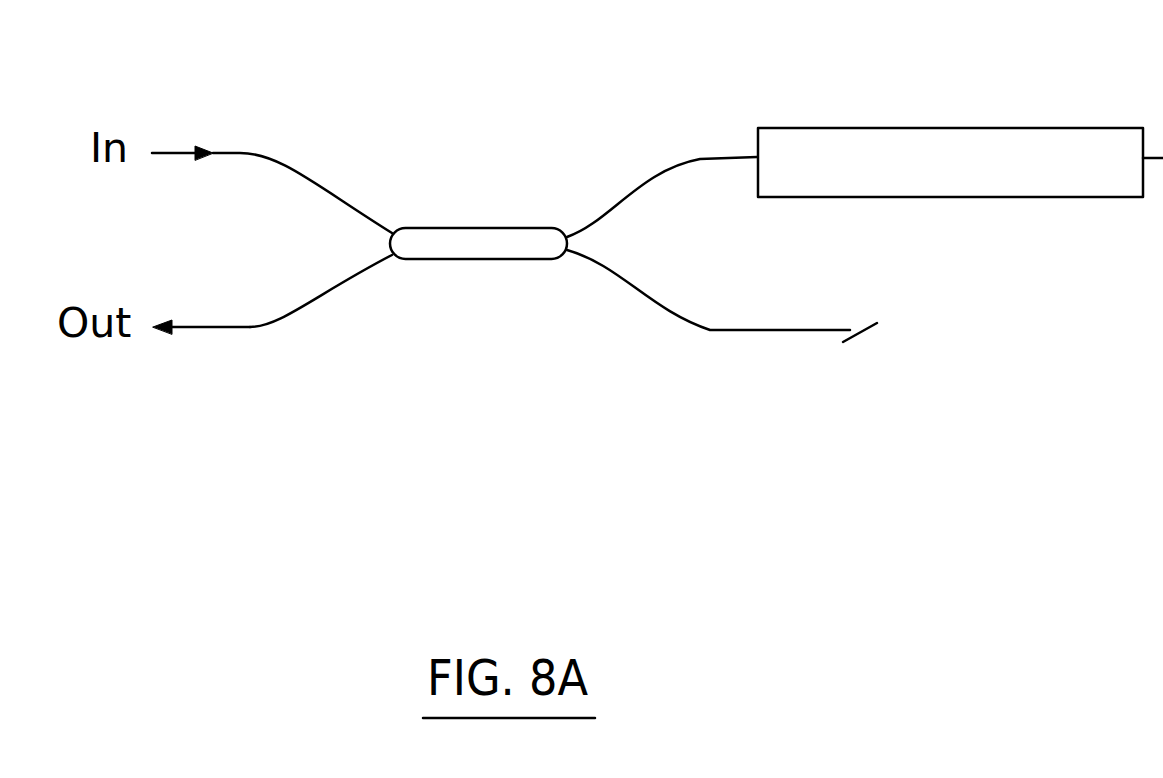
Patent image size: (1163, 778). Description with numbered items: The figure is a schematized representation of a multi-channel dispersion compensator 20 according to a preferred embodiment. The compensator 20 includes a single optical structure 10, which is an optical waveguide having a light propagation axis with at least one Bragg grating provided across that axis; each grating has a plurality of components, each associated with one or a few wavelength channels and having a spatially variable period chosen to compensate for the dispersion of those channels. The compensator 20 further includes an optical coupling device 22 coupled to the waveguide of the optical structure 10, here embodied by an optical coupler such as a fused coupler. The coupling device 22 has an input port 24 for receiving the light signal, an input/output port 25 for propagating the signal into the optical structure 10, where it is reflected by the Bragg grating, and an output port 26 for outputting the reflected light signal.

The optical structure 10 is at (932, 138).
The multi-channel dispersion compensator 20 is at (653, 220).
The optical coupling device 22 is at (472, 250).
The input port 24 is at (392, 230).
The input/output port 25 is at (662, 190).
The output port 26 is at (392, 252).